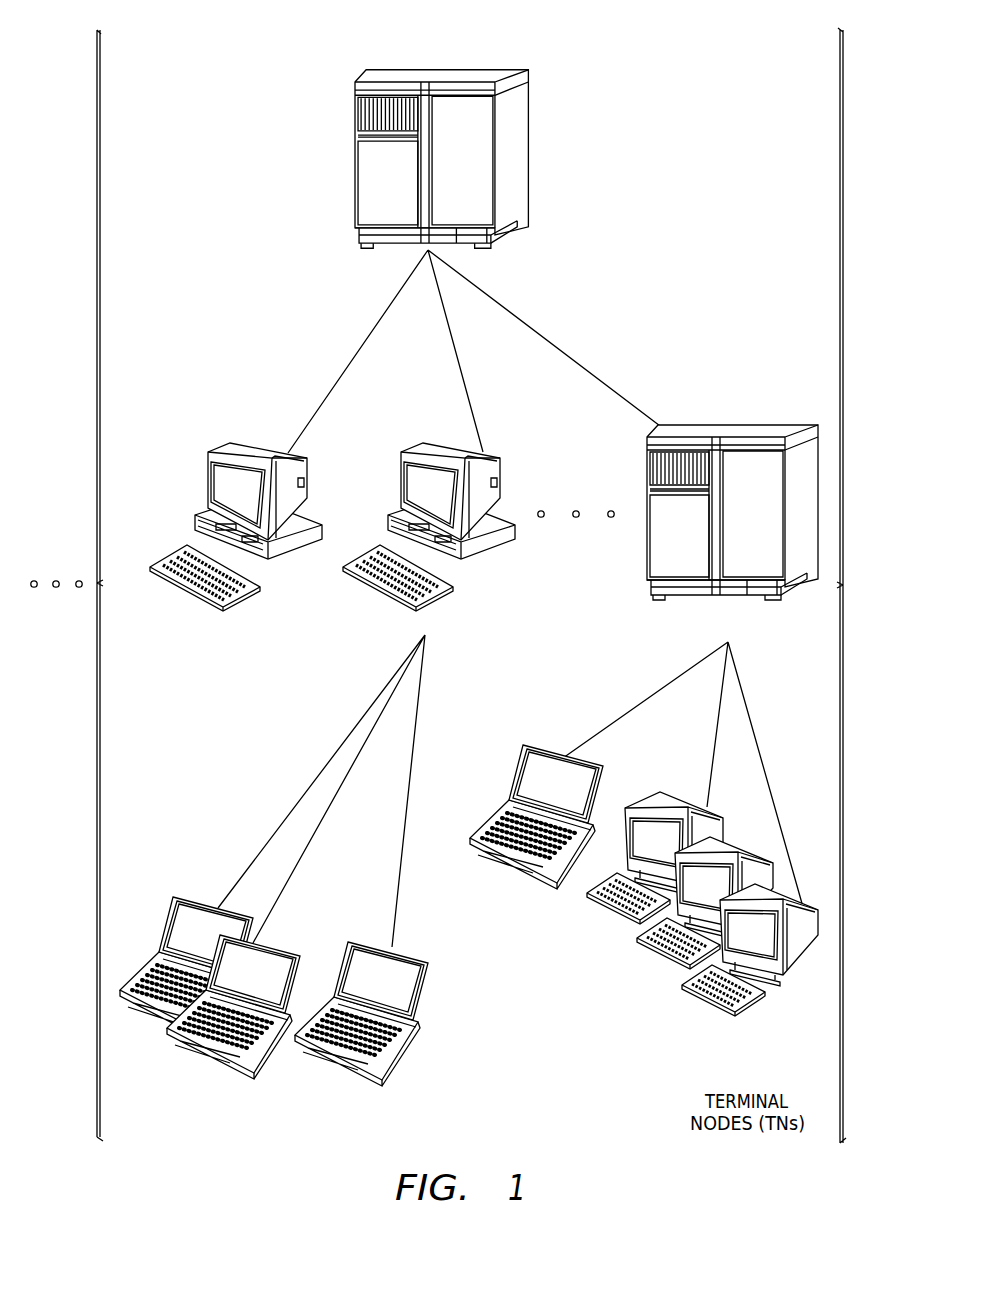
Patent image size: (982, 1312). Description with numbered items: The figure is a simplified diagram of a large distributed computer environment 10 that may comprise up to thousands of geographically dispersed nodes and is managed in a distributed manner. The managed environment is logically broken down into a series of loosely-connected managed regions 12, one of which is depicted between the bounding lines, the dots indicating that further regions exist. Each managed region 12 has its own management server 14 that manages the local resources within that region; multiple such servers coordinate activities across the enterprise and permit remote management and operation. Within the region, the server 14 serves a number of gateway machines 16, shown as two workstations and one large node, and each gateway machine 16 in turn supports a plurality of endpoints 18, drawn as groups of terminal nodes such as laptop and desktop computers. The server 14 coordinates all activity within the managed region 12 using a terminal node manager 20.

The distributed computer environment 10 is at (212, 799).
The managed region 12 is at (860, 243).
The management server 14 is at (527, 83).
The gateway machine 16 is at (208, 472).
The endpoint 18 is at (443, 897).
The terminal node manager 20 is at (310, 70).